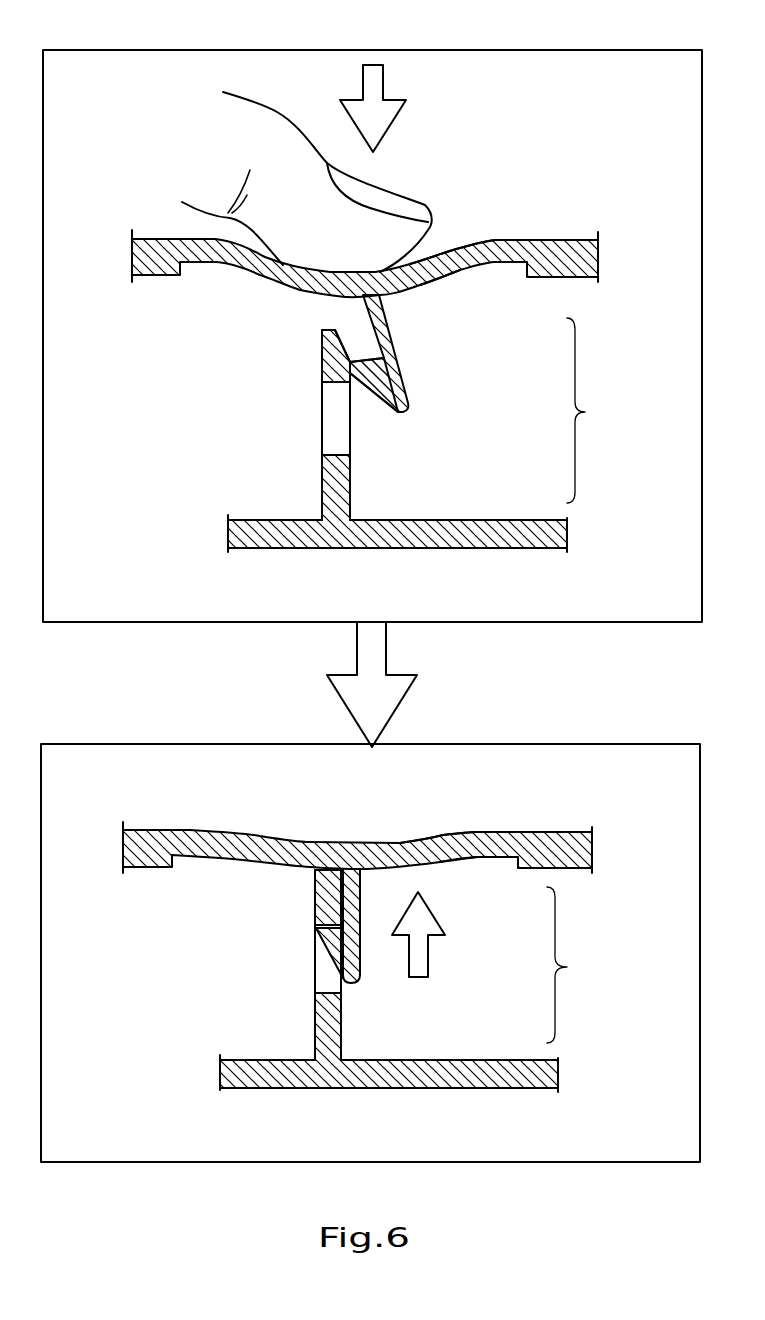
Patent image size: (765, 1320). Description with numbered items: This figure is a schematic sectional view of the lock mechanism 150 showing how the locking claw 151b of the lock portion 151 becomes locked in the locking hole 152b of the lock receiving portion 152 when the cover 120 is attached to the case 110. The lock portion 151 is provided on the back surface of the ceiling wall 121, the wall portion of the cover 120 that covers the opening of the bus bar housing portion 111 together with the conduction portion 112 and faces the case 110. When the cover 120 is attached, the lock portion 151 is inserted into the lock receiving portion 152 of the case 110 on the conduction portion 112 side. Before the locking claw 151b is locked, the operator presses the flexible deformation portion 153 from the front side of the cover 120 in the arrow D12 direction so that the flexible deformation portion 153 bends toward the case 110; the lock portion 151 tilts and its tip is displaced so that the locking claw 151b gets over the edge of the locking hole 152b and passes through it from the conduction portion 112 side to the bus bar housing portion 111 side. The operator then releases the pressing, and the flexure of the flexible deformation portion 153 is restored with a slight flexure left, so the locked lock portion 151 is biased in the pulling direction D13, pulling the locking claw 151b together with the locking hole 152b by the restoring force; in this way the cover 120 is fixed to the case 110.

The pressing direction D12 is at (383, 82).
The pulling direction D13 is at (428, 955).
The cover 120 is at (562, 234).
The ceiling wall 121 is at (460, 248).
The flexible deformation portion 153 is at (438, 283).
The lock portion 151 is at (424, 382).
The locking claw 151b is at (372, 393).
The lock receiving portion 152 is at (368, 497).
The locking hole 152b is at (337, 455).
The lock mechanism 150 is at (585, 412).
The bus bar housing portion 111 is at (256, 520).
The conduction portion 112 is at (547, 520).
The case 110 is at (389, 568).